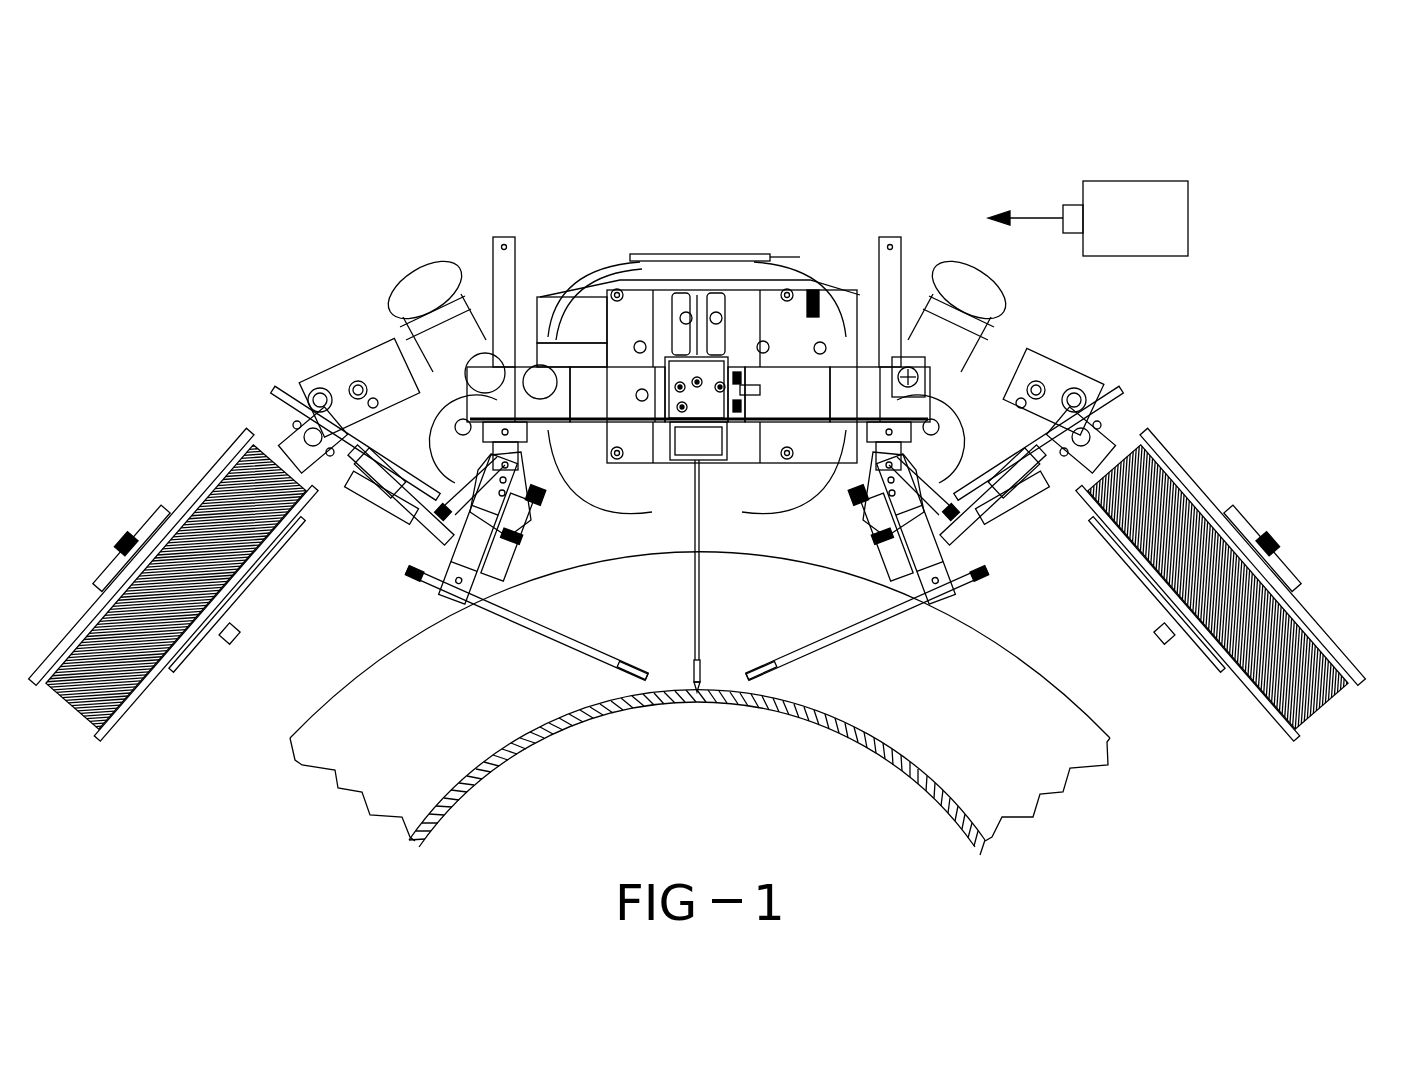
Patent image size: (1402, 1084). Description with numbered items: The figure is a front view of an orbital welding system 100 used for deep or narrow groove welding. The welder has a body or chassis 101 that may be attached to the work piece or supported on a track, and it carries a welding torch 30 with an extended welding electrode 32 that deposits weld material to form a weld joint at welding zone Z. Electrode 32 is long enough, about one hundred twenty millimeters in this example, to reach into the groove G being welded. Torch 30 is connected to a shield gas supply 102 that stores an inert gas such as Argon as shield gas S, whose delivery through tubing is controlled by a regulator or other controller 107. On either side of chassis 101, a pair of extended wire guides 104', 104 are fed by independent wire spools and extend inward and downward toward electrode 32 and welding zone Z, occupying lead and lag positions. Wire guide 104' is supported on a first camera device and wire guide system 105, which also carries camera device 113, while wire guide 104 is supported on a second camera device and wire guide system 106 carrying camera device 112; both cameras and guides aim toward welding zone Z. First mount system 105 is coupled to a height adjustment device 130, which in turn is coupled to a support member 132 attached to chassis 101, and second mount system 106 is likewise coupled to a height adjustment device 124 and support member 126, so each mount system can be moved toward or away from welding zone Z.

The welding system 100 is at (284, 218).
The welding torch 30 is at (682, 372).
The welder body or chassis 101 is at (782, 330).
The shield gas supply 102 is at (1158, 181).
The regulator or controller 107 is at (1075, 205).
The wire guide 104 is at (866, 630).
The wire guide 104' is at (526, 630).
The first camera device and wire guide system 105 is at (480, 570).
The second camera device and wire guide system 106 is at (912, 570).
The camera device 112 is at (954, 506).
The camera device 113 is at (440, 506).
The height adjustment device 124 is at (850, 407).
The support member 126 is at (797, 400).
The height adjustment device 130 is at (545, 407).
The support member 132 is at (598, 397).
The welding electrode 32 is at (698, 660).
The welding zone Z is at (698, 695).
The groove G is at (937, 748).
The shield gas S is at (1027, 215).